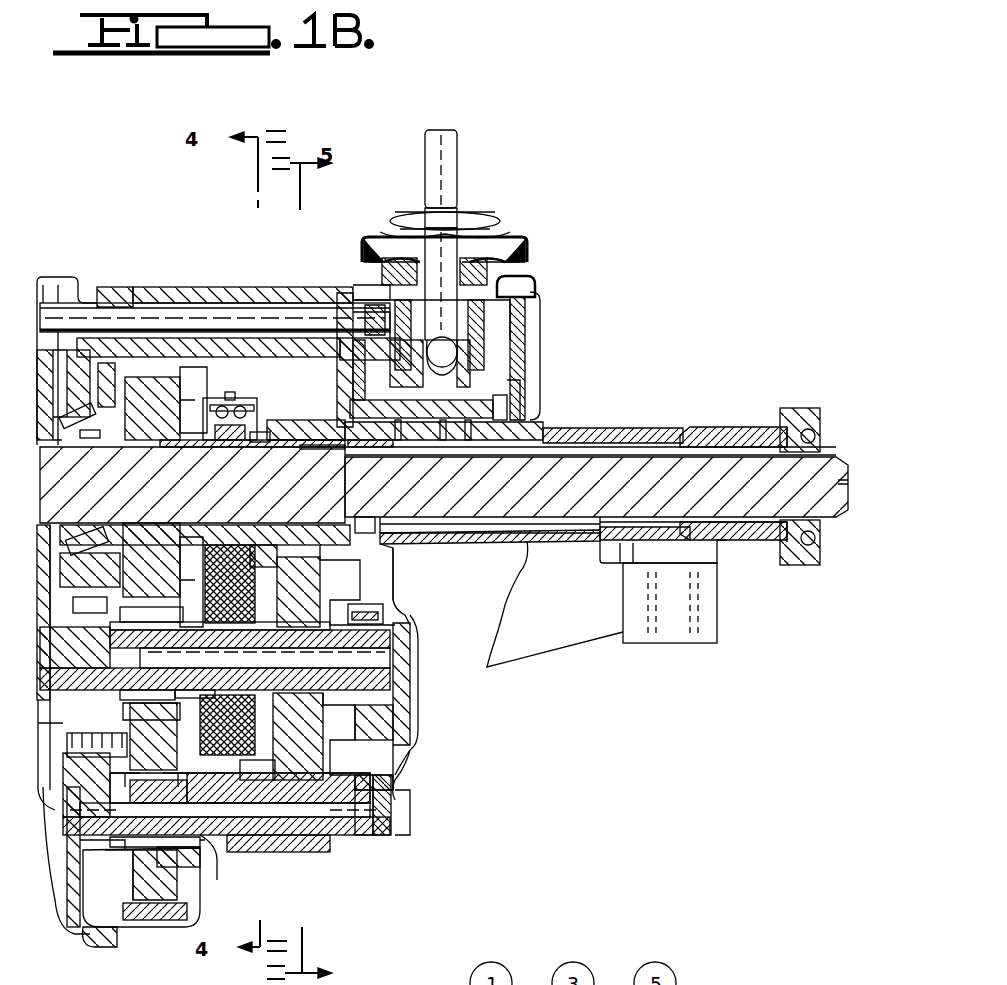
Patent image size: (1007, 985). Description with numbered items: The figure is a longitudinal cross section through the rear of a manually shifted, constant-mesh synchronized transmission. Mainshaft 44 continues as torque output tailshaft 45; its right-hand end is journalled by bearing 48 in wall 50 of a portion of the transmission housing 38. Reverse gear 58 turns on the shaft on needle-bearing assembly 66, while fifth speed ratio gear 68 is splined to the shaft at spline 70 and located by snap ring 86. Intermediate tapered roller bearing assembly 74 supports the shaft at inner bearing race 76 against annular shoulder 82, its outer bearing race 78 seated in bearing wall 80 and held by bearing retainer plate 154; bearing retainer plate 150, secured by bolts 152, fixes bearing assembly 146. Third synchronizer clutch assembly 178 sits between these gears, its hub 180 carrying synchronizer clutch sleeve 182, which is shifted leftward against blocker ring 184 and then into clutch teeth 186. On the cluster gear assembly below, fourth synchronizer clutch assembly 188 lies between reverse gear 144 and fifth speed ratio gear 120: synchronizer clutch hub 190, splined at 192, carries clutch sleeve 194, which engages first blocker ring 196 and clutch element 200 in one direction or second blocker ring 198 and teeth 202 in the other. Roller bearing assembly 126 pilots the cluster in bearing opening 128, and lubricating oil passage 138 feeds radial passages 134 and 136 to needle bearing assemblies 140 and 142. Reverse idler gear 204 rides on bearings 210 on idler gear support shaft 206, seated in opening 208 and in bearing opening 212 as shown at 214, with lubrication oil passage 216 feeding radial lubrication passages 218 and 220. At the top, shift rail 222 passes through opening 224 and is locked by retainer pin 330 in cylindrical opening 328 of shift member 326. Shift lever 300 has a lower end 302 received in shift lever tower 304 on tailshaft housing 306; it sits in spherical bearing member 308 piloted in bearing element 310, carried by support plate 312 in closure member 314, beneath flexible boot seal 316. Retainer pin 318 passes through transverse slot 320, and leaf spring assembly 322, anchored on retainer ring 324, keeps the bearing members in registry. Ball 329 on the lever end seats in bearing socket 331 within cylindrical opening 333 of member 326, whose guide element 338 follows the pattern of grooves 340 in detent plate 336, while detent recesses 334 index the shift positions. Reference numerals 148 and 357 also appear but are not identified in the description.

The shift lever 300 is at (444, 130).
The leaf spring assembly 322 is at (415, 217).
The flexible boot seal 316 is at (485, 230).
The retainer ring 324 is at (490, 238).
The transverse slot 320 is at (540, 240).
The bearing element 310 is at (368, 250).
The support plate 312 is at (378, 270).
The lower end of shift lever 302 is at (350, 294).
The spherical bearing member 308 is at (510, 289).
The closure member 314 is at (535, 304).
The shift lever tower 304 is at (522, 332).
The retainer pin 318 is at (450, 314).
The cylindrical opening 328 is at (380, 322).
The retainer pin 330 is at (458, 350).
The ball 329 is at (470, 360).
The bearing socket 331 is at (470, 374).
The shift member 326 is at (495, 390).
The pattern of grooves 340 is at (500, 398).
The detent plate 336 is at (505, 412).
The transmission tailshaft housing 306 is at (620, 436).
The torque output tailshaft 45 is at (705, 478).
The detent recesses 334 is at (399, 442).
The cylindrical opening 333 is at (444, 442).
The guide element 338 is at (470, 442).
The snap ring 86 is at (372, 447).
The bearing 48 is at (368, 517).
The end bearing support wall 50 is at (395, 548).
The opening 224 is at (80, 298).
The bearing wall 80 is at (113, 300).
The shift rail 222 is at (240, 300).
The reverse gear 58 is at (215, 317).
The bearing retainer plate 154 is at (145, 400).
The clutch teeth 186 is at (190, 390).
The inner bearing race 76 is at (70, 420).
The intermediate tapered roller bearing assembly 74 is at (90, 440).
The synchronizer clutch sleeve 182 is at (224, 405).
The third synchronizer clutch assembly 178 is at (250, 405).
The fifth speed ratio gear 68 is at (312, 425).
The bolt 357 is at (352, 385).
The blocker ring 184 is at (251, 457).
The mainshaft 44 is at (140, 498).
The needle-bearing assembly 66 is at (172, 535).
The annular shoulder 82 is at (70, 535).
The spline 70 is at (330, 449).
The hub 180 is at (255, 445).
The outer bearing race 78 is at (163, 575).
The fourth synchronizer clutch assembly 188 is at (285, 586).
The second blocker ring 198 is at (250, 607).
The fifth speed ratio gear 120 is at (325, 574).
The roller bearing assembly 126 is at (365, 606).
The lubricating oil passage 138 is at (412, 664).
The radial passage 136 is at (250, 645).
The synchronizer clutch hub 190 is at (220, 631).
The radial passage 134 is at (265, 662).
The spline 192 is at (210, 674).
The needle bearing assembly 142 is at (115, 620).
The bearing assembly 146 is at (70, 600).
The roller 148 is at (100, 650).
The reverse gear 144 is at (141, 686).
The first blocker ring 196 is at (210, 702).
The bolts 152 is at (128, 743).
The bearing retainer plate 150 is at (128, 760).
The clutch element 200 is at (225, 750).
The teeth 202 is at (256, 782).
The clutch sleeve 194 is at (256, 770).
The needle bearing assembly 140 is at (325, 740).
The bearing opening 128 is at (415, 752).
The radial lubrication passage 218 is at (150, 785).
The bearing opening 212 is at (393, 808).
The transmission housing 38 is at (396, 836).
The supported right-hand end of idler shaft 214 is at (364, 837).
The lubrication oil passage 216 is at (262, 834).
The radial lubrication passage 220 is at (218, 862).
The bearings 210 is at (190, 902).
The opening 208 is at (78, 867).
The idler gear support shaft 206 is at (85, 900).
The reverse idler gear 204 is at (165, 905).